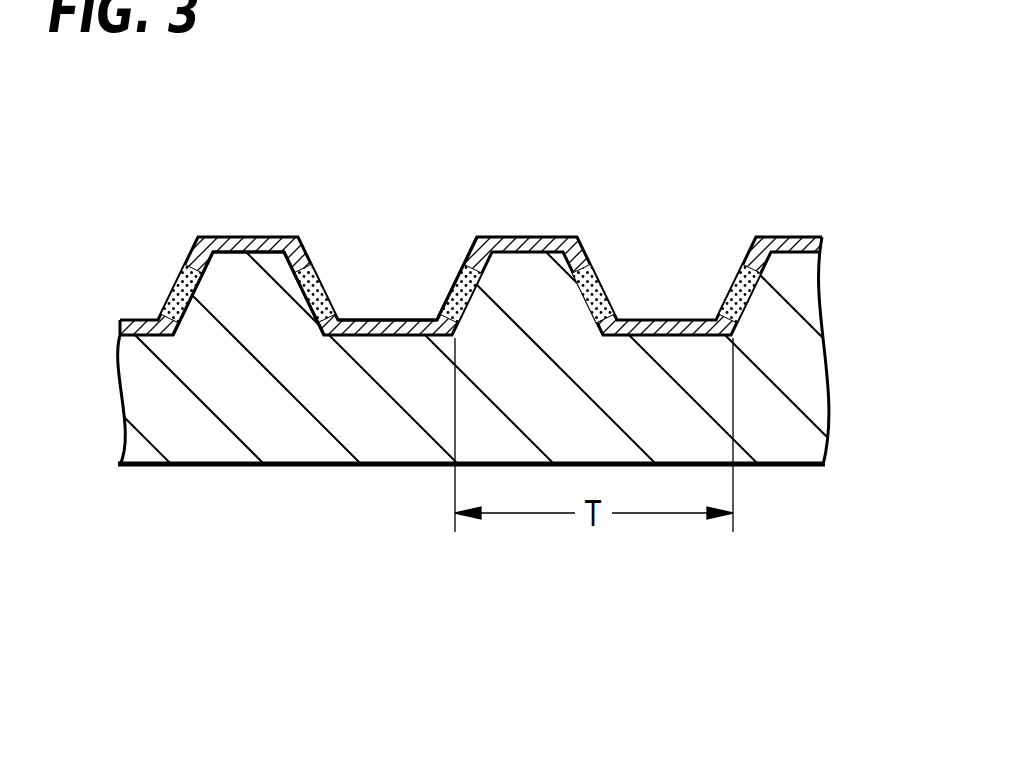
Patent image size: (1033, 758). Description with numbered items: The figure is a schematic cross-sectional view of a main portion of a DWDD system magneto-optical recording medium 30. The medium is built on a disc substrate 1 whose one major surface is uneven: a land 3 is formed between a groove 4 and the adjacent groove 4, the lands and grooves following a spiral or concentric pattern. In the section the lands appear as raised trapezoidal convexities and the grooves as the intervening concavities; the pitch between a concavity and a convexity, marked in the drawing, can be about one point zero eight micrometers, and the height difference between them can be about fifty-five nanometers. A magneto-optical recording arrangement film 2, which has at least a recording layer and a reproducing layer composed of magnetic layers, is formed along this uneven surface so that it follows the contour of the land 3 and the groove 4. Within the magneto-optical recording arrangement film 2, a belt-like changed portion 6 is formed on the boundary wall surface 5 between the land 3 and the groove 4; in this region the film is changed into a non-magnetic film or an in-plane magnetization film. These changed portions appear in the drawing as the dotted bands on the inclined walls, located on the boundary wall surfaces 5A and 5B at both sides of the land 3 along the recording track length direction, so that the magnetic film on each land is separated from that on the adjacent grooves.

The disc substrate 1 is at (260, 440).
The magneto-optical recording arrangement film 2 is at (222, 237).
The land 3 is at (254, 270).
The groove 4 is at (350, 320).
The boundary wall surface 5 is at (461, 326).
The boundary wall surface 5A is at (591, 297).
The boundary wall surface 5B is at (472, 295).
The belt-like changed portion 6 is at (457, 290).
The magneto-optical recording medium 30 is at (613, 143).